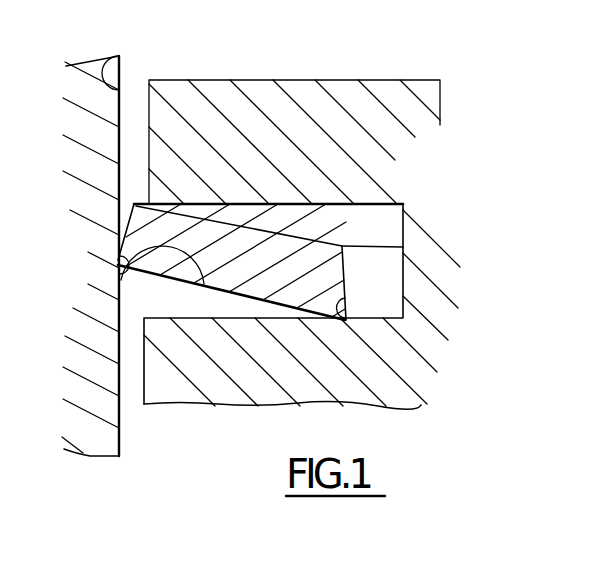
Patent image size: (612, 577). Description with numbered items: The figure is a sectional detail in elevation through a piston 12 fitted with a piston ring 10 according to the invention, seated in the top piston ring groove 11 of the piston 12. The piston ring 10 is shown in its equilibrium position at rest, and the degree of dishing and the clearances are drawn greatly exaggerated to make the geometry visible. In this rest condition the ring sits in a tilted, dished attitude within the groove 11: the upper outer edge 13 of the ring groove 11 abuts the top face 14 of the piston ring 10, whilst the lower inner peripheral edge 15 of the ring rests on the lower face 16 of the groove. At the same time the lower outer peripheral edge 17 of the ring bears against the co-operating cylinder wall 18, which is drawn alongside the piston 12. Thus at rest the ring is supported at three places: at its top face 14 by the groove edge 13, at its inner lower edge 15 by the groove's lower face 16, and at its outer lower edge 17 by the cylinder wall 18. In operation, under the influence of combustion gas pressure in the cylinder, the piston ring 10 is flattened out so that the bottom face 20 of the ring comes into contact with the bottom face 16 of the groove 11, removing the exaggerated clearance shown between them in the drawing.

The piston ring 10 is at (338, 273).
The top piston ring groove 11 is at (385, 218).
The piston 12 is at (366, 94).
The upper outer edge of the ring groove 13 is at (126, 196).
The top face of the piston ring 14 is at (303, 228).
The lower inner peripheral edge of the ring 15 is at (341, 290).
The lower face of the groove 16 is at (172, 311).
The lower outer peripheral edge of the ring 17 is at (111, 281).
The cylinder wall 18 is at (99, 50).
The bottom face of the ring 20 is at (114, 230).